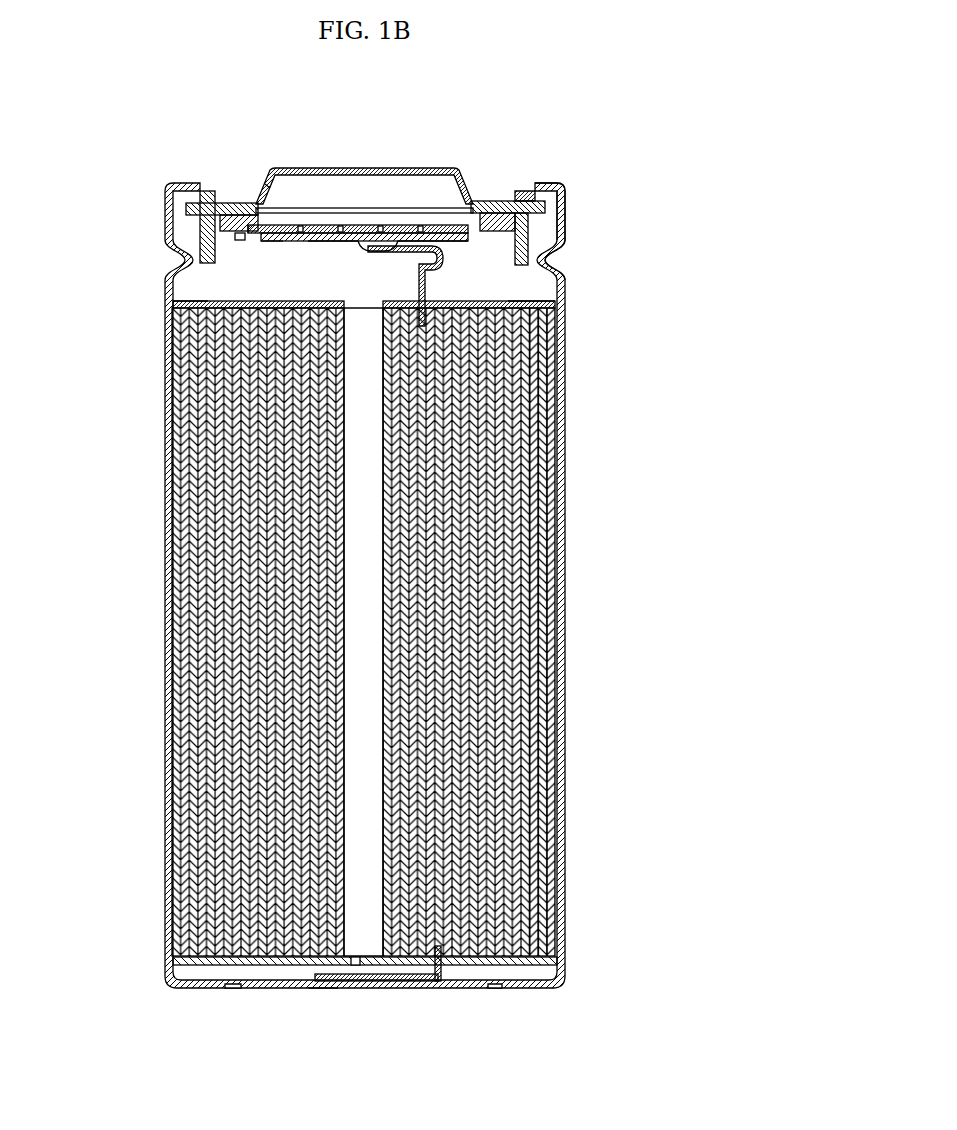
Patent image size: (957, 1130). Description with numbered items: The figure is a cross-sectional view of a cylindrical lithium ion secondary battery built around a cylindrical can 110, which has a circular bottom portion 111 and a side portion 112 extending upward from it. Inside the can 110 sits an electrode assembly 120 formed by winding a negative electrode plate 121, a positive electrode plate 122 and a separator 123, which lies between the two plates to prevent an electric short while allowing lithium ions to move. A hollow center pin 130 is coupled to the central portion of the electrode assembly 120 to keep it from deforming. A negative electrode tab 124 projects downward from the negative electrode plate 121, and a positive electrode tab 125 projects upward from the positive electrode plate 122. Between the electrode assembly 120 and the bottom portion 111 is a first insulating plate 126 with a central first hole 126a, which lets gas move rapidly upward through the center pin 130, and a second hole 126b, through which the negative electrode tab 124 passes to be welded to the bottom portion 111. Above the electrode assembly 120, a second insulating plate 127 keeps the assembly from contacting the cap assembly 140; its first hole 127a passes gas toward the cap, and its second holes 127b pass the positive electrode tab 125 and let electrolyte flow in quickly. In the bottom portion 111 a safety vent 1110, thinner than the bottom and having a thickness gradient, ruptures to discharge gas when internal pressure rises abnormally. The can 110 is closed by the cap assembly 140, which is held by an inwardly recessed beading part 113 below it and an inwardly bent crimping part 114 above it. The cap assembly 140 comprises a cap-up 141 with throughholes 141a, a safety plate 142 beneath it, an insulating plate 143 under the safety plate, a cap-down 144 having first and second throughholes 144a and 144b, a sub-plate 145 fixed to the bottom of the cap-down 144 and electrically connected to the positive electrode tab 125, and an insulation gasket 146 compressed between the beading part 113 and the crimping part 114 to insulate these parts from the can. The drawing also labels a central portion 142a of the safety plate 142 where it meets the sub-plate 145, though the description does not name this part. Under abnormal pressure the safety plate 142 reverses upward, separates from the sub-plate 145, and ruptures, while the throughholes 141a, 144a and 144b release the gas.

The cylindrical can 110 is at (117, 136).
The bottom portion 111 is at (315, 984).
The safety vent 1110 is at (223, 984).
The side portion 112 is at (557, 737).
The beading part 113 is at (541, 246).
The crimping part 114 is at (547, 174).
The electrode assembly 120 is at (547, 487).
The negative electrode plate 121 is at (540, 344).
The positive electrode plate 122 is at (540, 410).
The separator 123 is at (535, 368).
The negative electrode tab 124 is at (386, 973).
The positive electrode tab 125 is at (520, 260).
The first insulating plate 126 is at (522, 980).
The first hole 126a is at (352, 957).
The second hole 126b is at (430, 975).
The second insulating plate 127 is at (548, 295).
The first hole 127a is at (342, 297).
The second holes 127b is at (470, 297).
The center pin 130 is at (382, 655).
The cap assembly 140 is at (556, 93).
The cap-up 141 is at (387, 160).
The throughholes 141a is at (258, 178).
The safety plate 142 is at (432, 238).
The welded portion of tab 142a is at (362, 246).
The insulating plate 143 is at (497, 197).
The cap-down 144 is at (308, 222).
The first throughhole 144a is at (264, 238).
The second throughhole 144b is at (262, 234).
The sub-plate 145 is at (280, 227).
The insulation gasket 146 is at (521, 180).